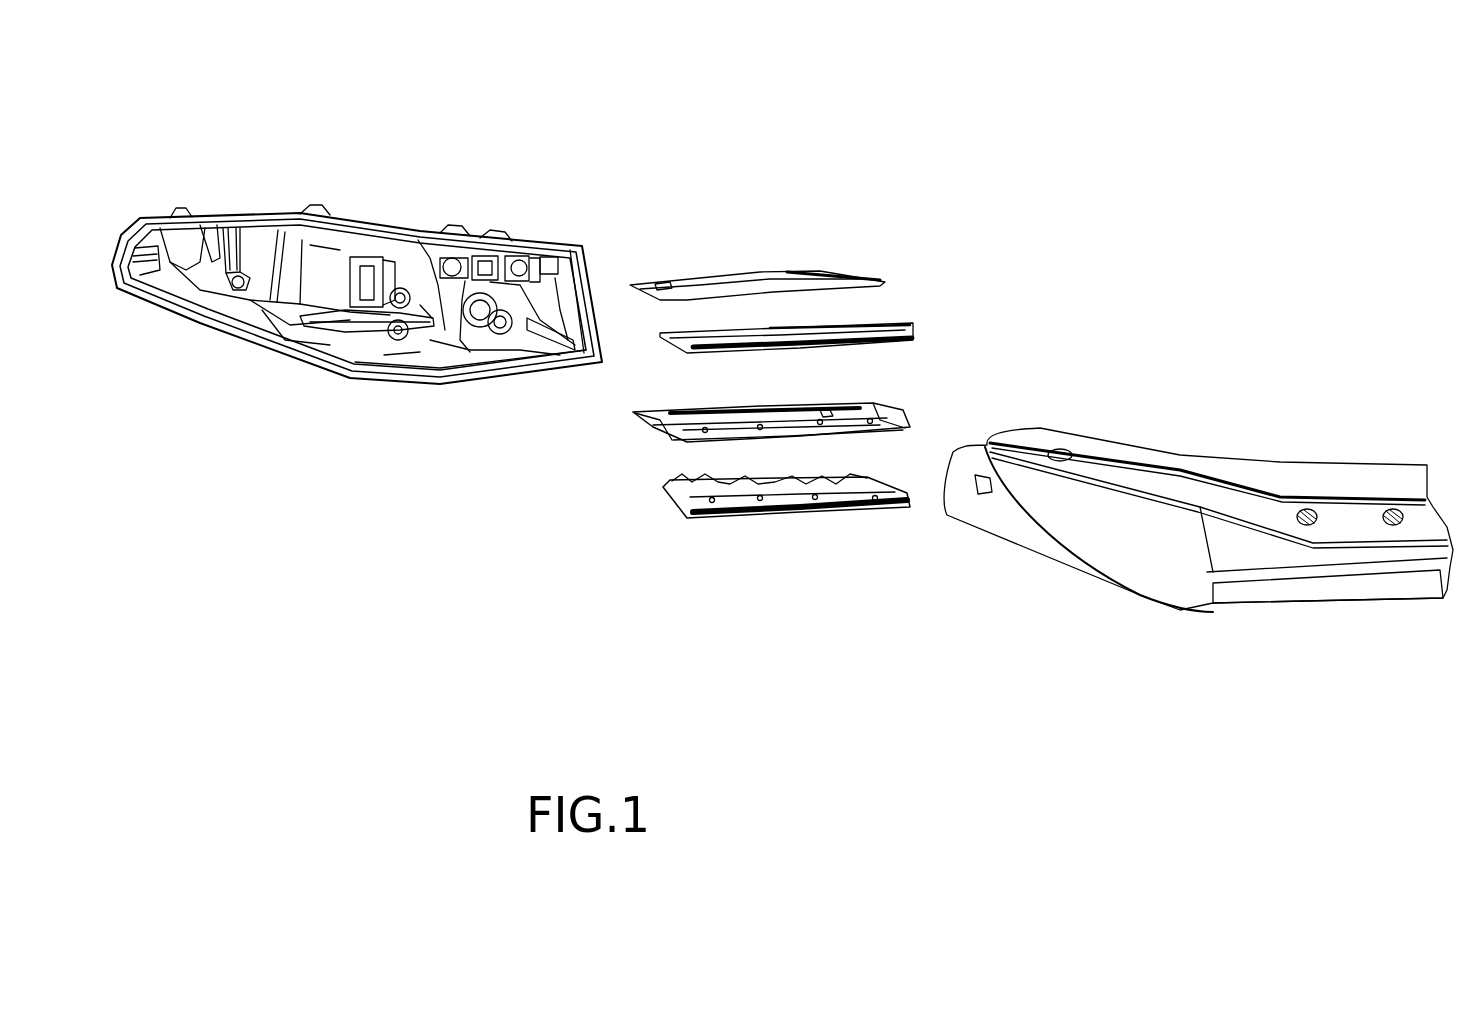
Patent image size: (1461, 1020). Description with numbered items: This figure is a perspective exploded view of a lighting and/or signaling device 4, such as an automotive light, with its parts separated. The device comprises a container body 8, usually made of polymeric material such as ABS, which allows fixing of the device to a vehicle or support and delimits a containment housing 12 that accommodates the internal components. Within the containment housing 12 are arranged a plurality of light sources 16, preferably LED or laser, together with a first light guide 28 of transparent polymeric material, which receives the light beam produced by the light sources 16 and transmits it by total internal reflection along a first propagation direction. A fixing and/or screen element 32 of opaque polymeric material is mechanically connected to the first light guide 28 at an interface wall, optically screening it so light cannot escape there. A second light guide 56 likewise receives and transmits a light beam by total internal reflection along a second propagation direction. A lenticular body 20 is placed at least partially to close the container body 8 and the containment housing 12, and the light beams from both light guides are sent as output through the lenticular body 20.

The lighting and/or signaling device 4 is at (838, 79).
The container body 8 is at (285, 216).
The containment housing 12 is at (400, 358).
The light sources 16 is at (772, 297).
The lenticular body 20 is at (1148, 545).
The first light guide 28 is at (904, 330).
The fixing and/or screen element 32 is at (656, 420).
The second light guide 56 is at (786, 520).